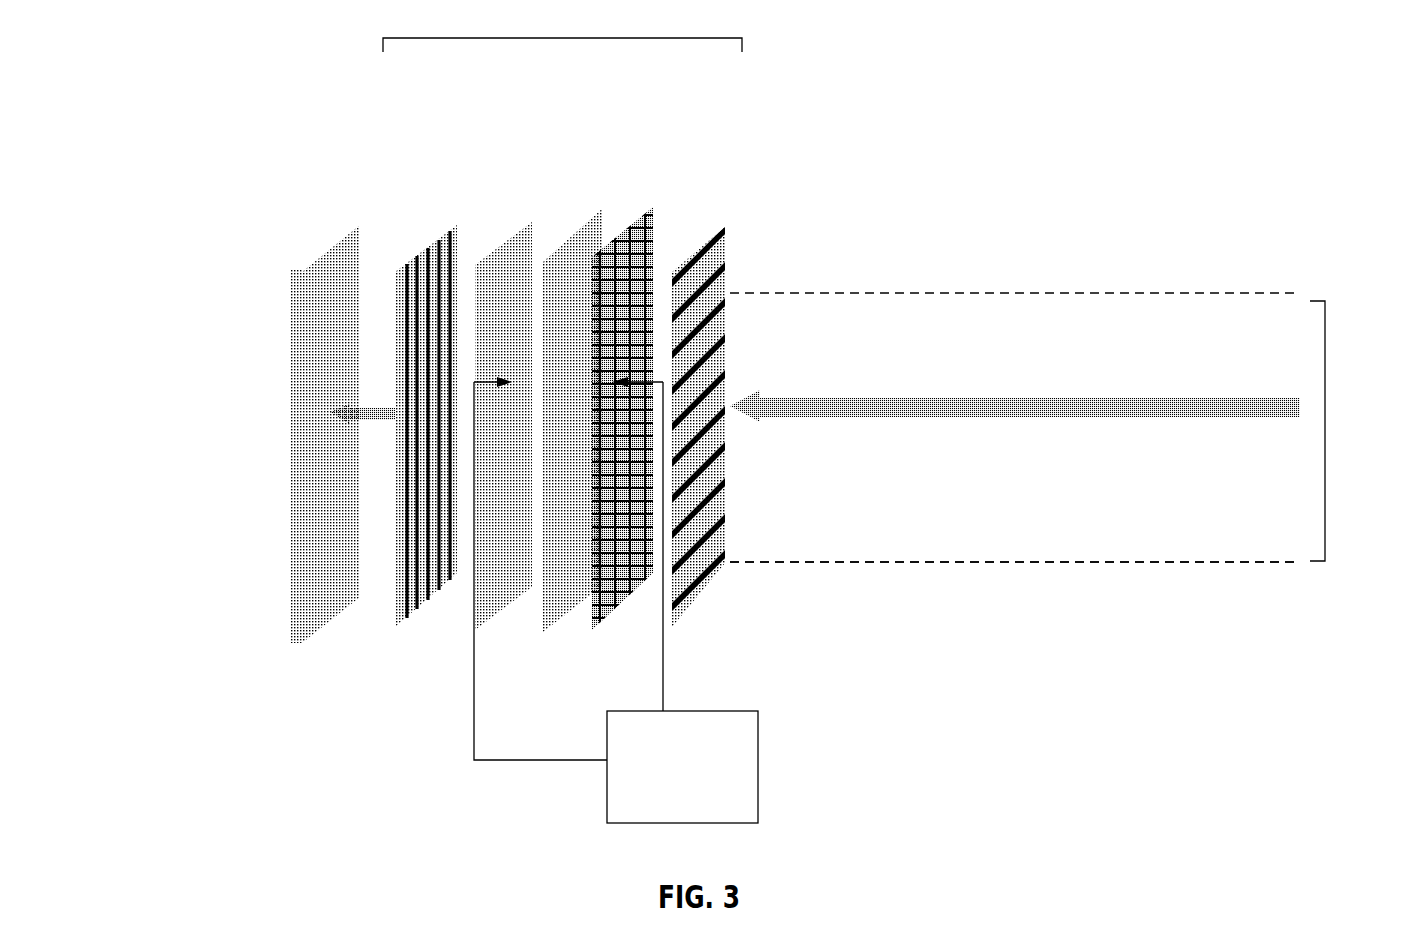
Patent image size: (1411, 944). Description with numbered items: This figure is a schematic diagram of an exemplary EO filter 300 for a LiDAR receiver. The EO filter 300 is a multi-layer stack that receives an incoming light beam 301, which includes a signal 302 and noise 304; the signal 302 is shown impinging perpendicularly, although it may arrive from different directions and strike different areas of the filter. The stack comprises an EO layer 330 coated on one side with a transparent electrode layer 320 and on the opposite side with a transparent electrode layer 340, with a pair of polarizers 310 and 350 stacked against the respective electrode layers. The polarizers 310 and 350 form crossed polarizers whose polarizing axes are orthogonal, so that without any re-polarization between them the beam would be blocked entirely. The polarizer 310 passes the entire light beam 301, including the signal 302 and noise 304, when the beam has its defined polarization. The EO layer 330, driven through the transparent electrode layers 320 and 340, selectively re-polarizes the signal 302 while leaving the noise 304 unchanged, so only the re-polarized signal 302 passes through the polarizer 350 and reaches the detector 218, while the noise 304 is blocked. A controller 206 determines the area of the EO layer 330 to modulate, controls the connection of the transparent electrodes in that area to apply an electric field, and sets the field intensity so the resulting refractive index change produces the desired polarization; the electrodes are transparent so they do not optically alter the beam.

The EO filter 300 is at (543, 15).
The detector 218 is at (283, 447).
The polarizer 350 is at (408, 626).
The transparent electrode layer 340 is at (517, 235).
The EO layer 330 is at (545, 635).
The transparent electrode layer 320 is at (637, 235).
The polarizer 310 is at (698, 605).
The light beam 301 is at (1328, 431).
The signal 302 is at (1015, 391).
The noise 304 is at (1015, 520).
The controller 206 is at (616, 600).